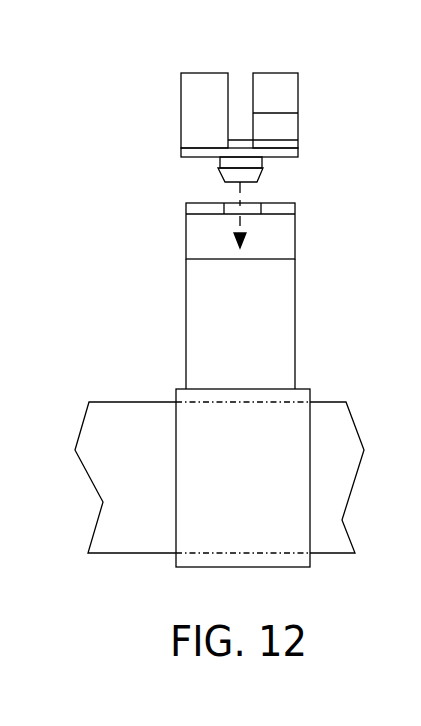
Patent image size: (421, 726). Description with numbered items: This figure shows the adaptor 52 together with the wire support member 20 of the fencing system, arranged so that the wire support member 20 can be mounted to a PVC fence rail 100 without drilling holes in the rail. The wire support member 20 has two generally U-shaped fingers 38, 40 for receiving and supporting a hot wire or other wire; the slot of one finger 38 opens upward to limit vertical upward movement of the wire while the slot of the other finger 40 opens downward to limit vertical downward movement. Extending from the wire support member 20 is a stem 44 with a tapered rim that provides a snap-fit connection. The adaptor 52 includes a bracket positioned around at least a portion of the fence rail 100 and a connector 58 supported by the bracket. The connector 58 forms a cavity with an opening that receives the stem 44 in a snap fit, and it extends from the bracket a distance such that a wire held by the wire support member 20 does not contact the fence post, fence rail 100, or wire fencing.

The wire support member 20 is at (323, 70).
The finger 38 is at (181, 113).
The finger 40 is at (293, 98).
The stem 44 is at (262, 159).
The adaptor 52 is at (132, 265).
The connector 58 is at (186, 316).
The PVC rail 100 is at (327, 413).